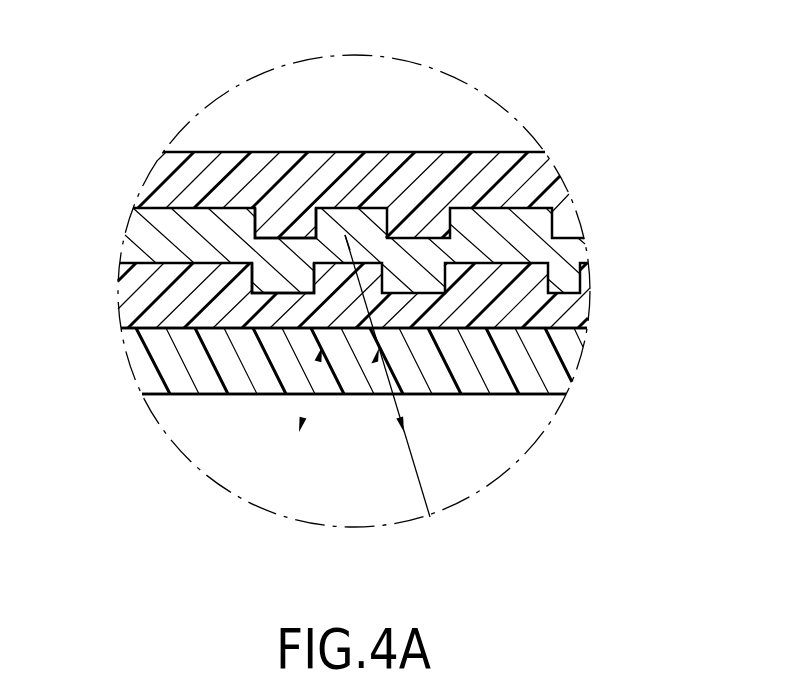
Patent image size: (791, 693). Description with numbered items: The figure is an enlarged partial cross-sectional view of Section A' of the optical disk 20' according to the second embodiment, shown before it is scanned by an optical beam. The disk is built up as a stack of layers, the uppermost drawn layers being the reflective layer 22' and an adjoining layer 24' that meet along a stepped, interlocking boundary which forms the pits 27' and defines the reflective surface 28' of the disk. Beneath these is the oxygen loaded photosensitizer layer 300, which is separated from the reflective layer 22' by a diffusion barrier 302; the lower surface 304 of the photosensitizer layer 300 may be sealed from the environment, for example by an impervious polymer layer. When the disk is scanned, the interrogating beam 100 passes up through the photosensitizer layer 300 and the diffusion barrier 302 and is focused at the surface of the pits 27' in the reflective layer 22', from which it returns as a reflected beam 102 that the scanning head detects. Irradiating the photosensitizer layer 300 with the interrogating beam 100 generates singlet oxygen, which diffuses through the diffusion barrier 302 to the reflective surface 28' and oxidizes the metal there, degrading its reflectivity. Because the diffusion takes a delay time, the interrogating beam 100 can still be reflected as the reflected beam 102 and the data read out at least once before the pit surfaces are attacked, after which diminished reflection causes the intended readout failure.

The Section A' is at (459, 346).
The optical disk 20' is at (352, 168).
The reflective layer 22' is at (315, 250).
The second layer 24' is at (354, 194).
The pits 27' is at (440, 306).
The reflective surface 28' is at (267, 202).
The photosensitizer layer 300 is at (513, 370).
The diffusion barrier 302 is at (568, 316).
The lower surface 304 is at (540, 370).
The interrogating beam 100 is at (283, 478).
The reflected beam 102 is at (422, 490).